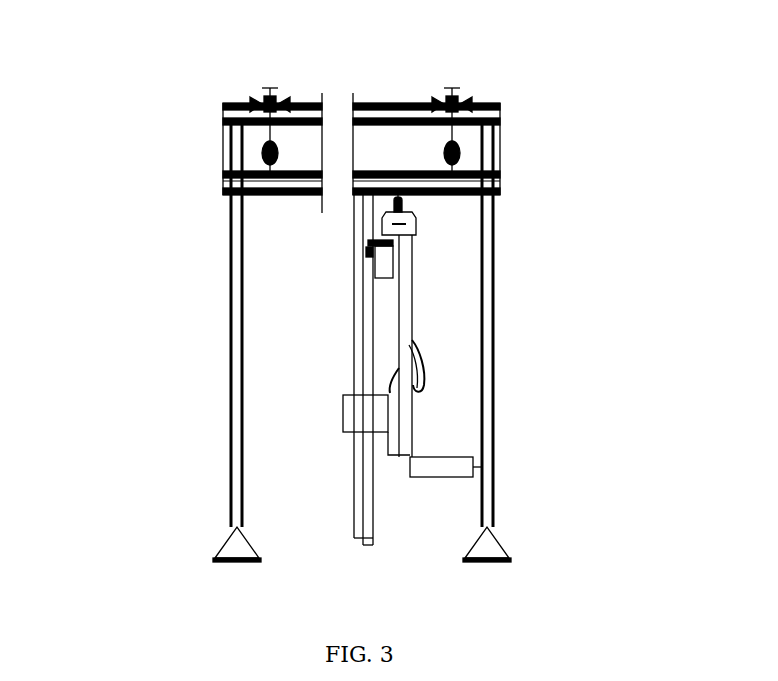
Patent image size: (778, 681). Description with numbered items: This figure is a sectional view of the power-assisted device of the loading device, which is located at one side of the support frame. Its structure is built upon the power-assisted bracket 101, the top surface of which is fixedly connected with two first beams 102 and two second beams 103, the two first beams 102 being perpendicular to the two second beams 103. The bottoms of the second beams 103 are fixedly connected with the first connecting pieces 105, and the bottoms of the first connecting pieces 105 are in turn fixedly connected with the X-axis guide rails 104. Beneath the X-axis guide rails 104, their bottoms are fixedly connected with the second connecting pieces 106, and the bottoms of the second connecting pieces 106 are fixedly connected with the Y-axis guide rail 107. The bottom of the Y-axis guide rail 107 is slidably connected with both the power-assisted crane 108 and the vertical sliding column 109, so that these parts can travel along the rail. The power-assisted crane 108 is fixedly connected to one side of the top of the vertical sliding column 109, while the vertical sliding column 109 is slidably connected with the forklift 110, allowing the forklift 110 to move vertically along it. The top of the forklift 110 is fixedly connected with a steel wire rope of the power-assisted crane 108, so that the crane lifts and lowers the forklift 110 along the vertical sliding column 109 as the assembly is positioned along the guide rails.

The power-assisted bracket 101 is at (562, 343).
The first beams 102 is at (403, 326).
The second beams 103 is at (549, 87).
The X-axis guide rails 104 is at (510, 177).
The first connecting pieces 105 is at (177, 64).
The second connecting pieces 106 is at (173, 127).
The Y-axis guide rail 107 is at (193, 327).
The power-assisted crane 108 is at (229, 340).
The vertical sliding column 109 is at (273, 476).
The forklift 110 is at (224, 409).